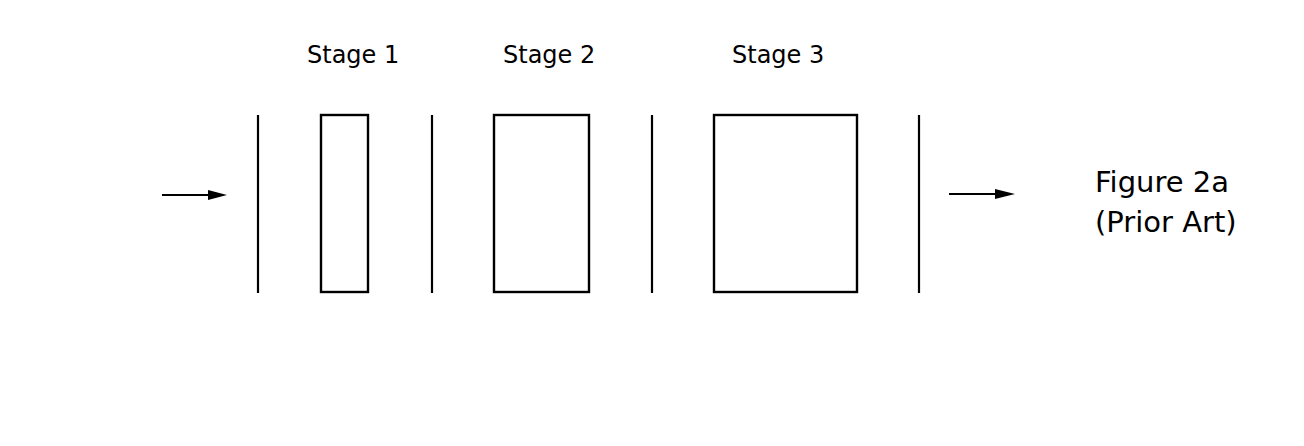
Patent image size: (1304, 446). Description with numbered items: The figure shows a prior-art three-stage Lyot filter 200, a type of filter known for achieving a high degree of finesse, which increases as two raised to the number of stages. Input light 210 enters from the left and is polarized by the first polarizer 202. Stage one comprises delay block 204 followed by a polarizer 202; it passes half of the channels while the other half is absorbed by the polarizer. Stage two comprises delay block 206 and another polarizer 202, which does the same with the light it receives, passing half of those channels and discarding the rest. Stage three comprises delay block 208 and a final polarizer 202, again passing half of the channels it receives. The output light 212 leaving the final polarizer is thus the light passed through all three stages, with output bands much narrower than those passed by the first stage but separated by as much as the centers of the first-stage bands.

The 3-stage Lyot filter 200 is at (588, 438).
The polarizer 202 is at (581, 235).
The delay block 204 is at (344, 235).
The delay block 206 is at (541, 235).
The delay block 208 is at (785, 235).
The input light 210 is at (194, 176).
The output signal 212 is at (982, 175).